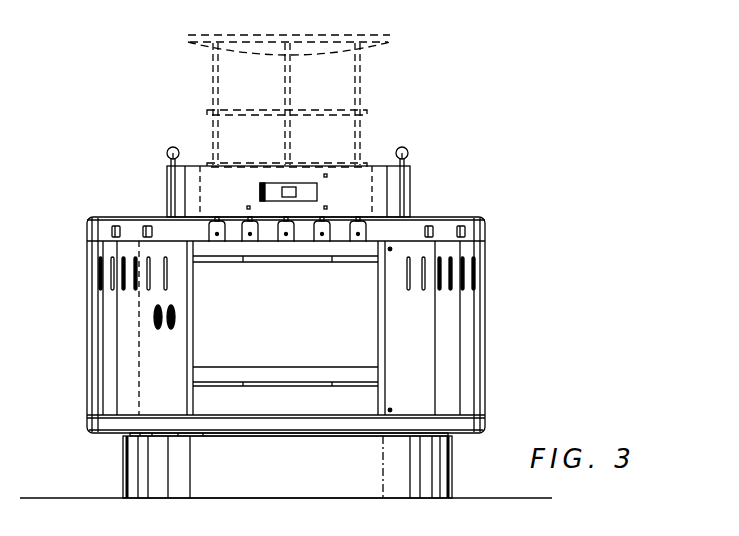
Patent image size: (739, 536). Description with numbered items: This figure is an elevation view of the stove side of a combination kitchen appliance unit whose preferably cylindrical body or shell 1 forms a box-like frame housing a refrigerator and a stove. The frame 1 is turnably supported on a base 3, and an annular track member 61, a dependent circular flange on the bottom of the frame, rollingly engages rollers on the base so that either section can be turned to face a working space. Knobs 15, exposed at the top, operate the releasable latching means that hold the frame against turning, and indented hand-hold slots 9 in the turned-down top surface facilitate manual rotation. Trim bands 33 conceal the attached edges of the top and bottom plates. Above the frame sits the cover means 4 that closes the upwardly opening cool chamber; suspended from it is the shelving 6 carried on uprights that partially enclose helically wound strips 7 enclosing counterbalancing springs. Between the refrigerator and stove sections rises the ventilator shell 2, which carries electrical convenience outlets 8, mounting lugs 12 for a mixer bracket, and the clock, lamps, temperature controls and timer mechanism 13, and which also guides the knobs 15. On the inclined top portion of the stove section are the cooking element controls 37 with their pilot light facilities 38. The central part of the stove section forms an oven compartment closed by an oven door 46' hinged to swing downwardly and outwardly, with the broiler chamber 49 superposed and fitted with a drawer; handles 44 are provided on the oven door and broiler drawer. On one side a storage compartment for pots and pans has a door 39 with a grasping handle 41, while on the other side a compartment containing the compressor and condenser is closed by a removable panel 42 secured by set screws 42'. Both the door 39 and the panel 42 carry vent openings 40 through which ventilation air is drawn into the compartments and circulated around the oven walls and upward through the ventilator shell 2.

The body or shell 1 is at (483, 216).
The ventilator shell 2 is at (181, 181).
The base 3 is at (437, 472).
The cover means 4 is at (295, 40).
The shelving 6 is at (312, 112).
The helically wound strip 7 is at (220, 95).
The electrical convenience outlets 8 is at (291, 165).
The hand-holds 9 is at (116, 226).
The mounting lugs 12 is at (246, 178).
The clock, lamps, temperature controls and timer mechanism 13 is at (313, 191).
The knobs 15 is at (172, 150).
The trim bands 33 is at (88, 241).
The cooking element controls 37 is at (362, 206).
The pilot light facilities 38 is at (238, 240).
The door 39 is at (110, 345).
The vent openings 40 is at (112, 272).
The grasping handle 41 is at (175, 329).
The removable panel 42 is at (478, 328).
The set screws 42' is at (407, 330).
The handles 44 is at (262, 263).
The oven door 46' is at (303, 328).
The broiler chamber 49 is at (368, 400).
The annular track member 61 is at (126, 434).